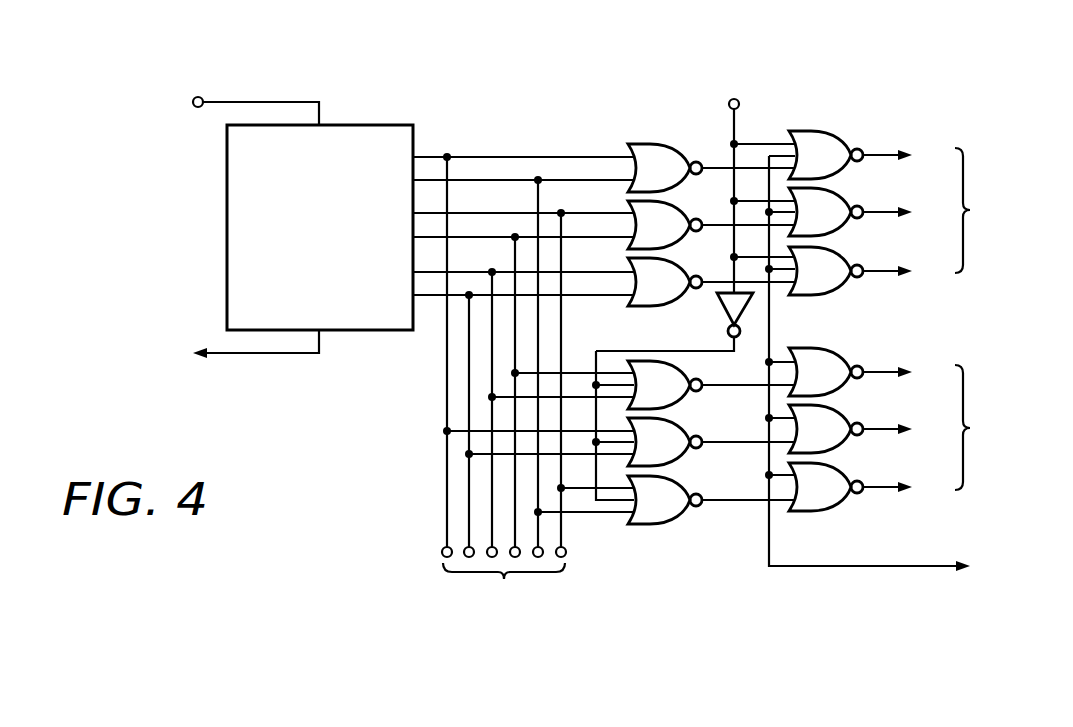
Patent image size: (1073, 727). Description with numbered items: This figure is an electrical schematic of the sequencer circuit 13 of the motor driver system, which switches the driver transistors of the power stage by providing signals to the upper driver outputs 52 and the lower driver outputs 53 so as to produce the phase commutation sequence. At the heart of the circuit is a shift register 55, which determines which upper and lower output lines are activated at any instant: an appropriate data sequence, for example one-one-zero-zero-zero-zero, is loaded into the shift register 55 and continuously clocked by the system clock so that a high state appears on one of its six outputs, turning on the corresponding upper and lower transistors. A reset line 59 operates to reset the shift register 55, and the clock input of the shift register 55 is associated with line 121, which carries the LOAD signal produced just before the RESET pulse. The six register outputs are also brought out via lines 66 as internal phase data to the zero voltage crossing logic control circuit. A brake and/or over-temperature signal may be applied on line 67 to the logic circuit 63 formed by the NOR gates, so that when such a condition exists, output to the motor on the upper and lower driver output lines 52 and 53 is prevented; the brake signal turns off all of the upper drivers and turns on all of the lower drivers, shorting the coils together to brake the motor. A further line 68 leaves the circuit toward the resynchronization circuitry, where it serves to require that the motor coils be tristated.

The sequencer circuit 13 is at (461, 70).
The shift register 55 is at (227, 216).
The reset line 59 is at (262, 100).
The line carrying the LOAD signal 121 is at (262, 356).
The lines 66 is at (398, 528).
The line 67 is at (734, 132).
The logic circuit 63 is at (813, 106).
The line 68 is at (840, 568).
The upper driver outputs 52 is at (912, 118).
The lower driver outputs 53 is at (910, 516).